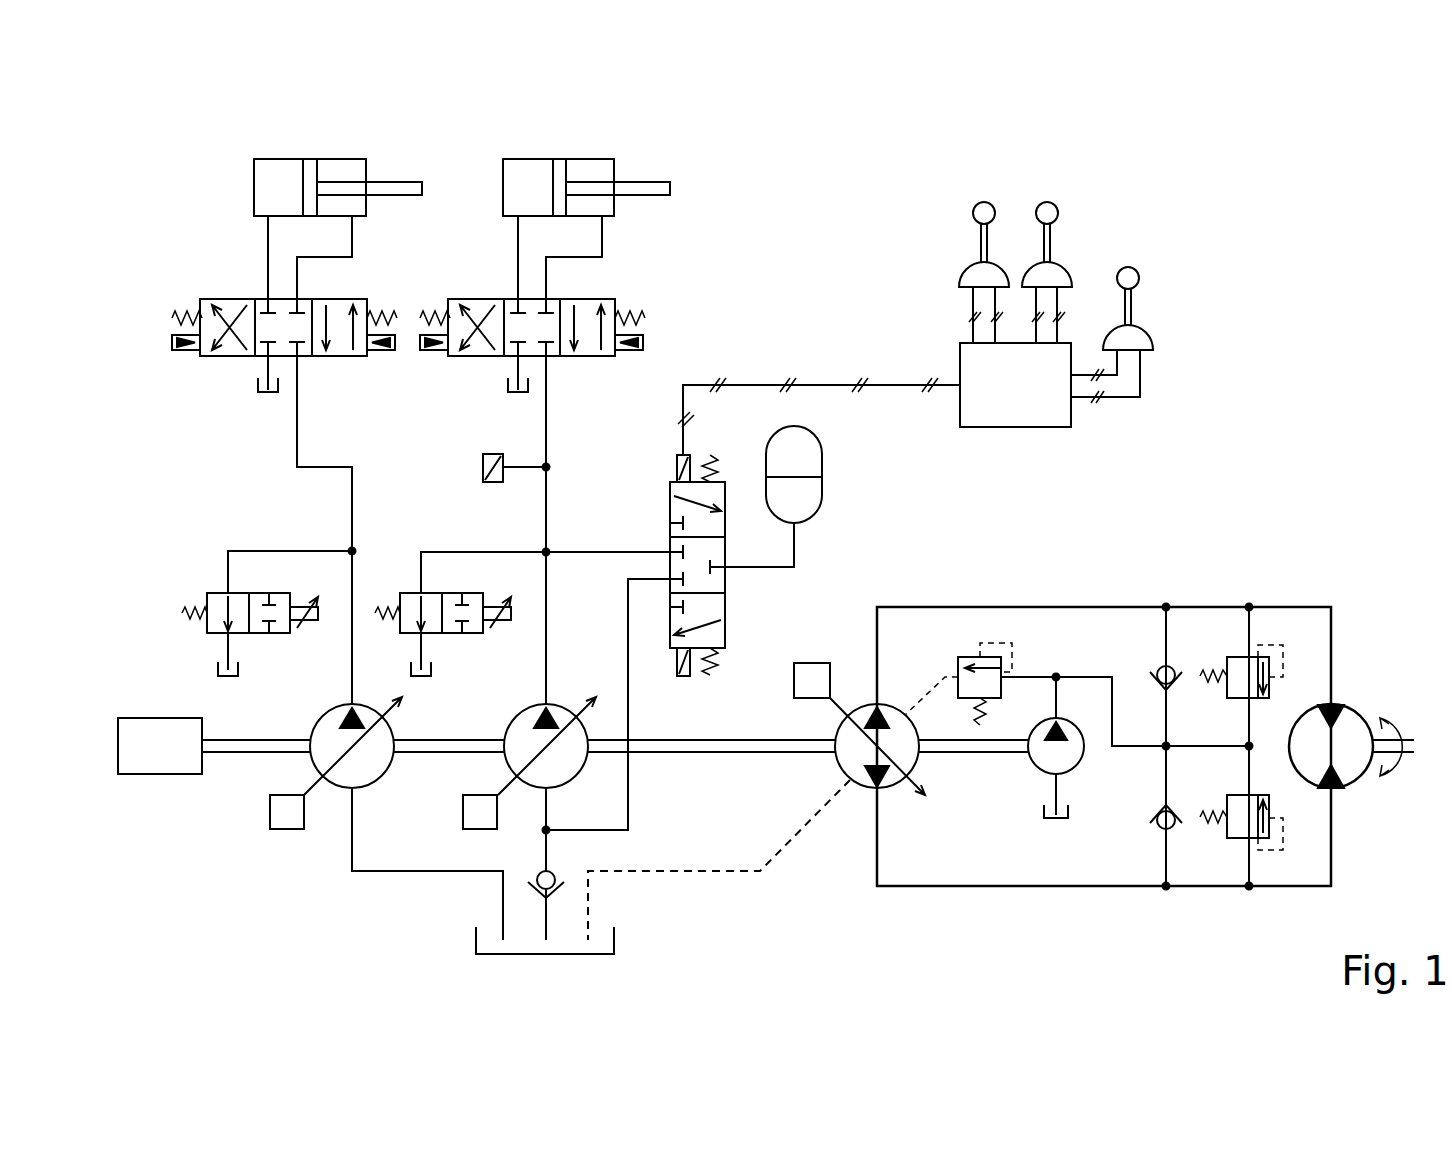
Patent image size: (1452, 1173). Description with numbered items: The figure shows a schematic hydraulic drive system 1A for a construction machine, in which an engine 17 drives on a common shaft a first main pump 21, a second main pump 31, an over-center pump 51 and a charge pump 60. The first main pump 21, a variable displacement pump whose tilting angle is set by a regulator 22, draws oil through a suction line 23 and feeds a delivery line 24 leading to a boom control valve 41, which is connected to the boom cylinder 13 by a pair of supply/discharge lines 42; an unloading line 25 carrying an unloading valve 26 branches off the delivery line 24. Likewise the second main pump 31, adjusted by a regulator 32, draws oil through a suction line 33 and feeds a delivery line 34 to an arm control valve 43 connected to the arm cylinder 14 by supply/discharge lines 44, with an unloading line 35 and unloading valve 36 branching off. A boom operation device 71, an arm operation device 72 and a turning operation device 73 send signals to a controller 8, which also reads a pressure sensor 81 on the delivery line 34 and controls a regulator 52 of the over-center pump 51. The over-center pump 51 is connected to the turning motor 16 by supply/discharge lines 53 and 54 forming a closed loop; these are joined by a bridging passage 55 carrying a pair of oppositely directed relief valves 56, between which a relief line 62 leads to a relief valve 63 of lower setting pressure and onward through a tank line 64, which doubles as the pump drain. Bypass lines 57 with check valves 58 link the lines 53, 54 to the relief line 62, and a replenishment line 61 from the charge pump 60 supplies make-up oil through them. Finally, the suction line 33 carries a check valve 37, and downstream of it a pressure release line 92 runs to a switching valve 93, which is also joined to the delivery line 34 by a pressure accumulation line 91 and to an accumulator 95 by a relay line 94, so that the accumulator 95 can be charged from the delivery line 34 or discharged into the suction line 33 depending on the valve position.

The hydraulic drive system 1A is at (1225, 242).
The controller 8 is at (1006, 427).
The boom cylinder 13 is at (346, 159).
The arm cylinder 14 is at (595, 159).
The turning motor 16 is at (1355, 786).
The engine 17 is at (158, 765).
The first main pump 21 is at (337, 788).
The regulator 22 is at (290, 822).
The suction line 23 is at (410, 871).
The delivery line 24 is at (297, 436).
The unloading line 25 is at (268, 551).
The unloading valve 26 is at (225, 593).
The second main pump 31 is at (573, 781).
The regulator 32 is at (466, 811).
The suction line 33 is at (550, 914).
The delivery line 34 is at (547, 512).
The unloading line 35 is at (478, 552).
The unloading valve 36 is at (418, 593).
The check valve 37 is at (555, 875).
The boom control valve 41 is at (362, 299).
The supply/discharge lines 42 is at (325, 257).
The arm control valve 43 is at (610, 299).
The supply/discharge lines 44 is at (575, 257).
The over-center pump 51 is at (856, 790).
The regulator 52 is at (811, 670).
The supply/discharge line 53 is at (988, 607).
The supply/discharge line 54 is at (990, 886).
The bridging passage 55 is at (1252, 625).
The relief valves 56 is at (1272, 690).
The bypass lines 57 is at (1157, 648).
The check valves 58 is at (1178, 666).
The charge pump 60 is at (1035, 772).
The replenishment line 61 is at (1060, 700).
The relief line 62 is at (1094, 670).
The relief valve 63 is at (968, 652).
The tank line 64 is at (786, 848).
The boom operation device 71 is at (970, 264).
The arm operation device 72 is at (1060, 265).
The turning operation device 73 is at (1155, 343).
The pressure sensor 81 is at (490, 454).
The pressure accumulation line 91 is at (609, 552).
The pressure release line 92 is at (627, 673).
The switching valve 93 is at (727, 608).
The relay line 94 is at (800, 545).
The accumulator 95 is at (824, 463).